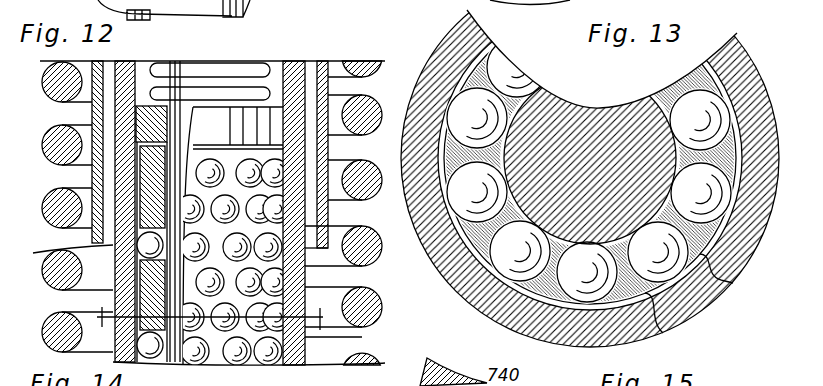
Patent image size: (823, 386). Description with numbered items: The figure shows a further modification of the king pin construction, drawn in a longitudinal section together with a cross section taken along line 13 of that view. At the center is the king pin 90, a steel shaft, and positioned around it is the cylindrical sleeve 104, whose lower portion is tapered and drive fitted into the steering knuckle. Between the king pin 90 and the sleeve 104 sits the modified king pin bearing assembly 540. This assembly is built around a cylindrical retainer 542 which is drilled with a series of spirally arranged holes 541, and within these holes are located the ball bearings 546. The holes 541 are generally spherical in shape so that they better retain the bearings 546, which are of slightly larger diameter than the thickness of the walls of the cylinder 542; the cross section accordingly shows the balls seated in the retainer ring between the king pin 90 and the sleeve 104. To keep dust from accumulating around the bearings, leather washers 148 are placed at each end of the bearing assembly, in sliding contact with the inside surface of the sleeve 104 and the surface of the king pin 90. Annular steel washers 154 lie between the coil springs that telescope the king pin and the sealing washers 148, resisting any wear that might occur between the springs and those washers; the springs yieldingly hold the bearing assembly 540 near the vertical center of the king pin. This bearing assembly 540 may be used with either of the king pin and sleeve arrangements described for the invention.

In FIG. 12, the section line 13- 13 is at (211, 328).
In FIG. 12, the king pin 90 is at (243, 84).
In FIG. 13, the king pin 90 is at (590, 158).
In FIG. 12, the cylindrical sleeve 104 is at (120, 296).
In FIG. 13, the cylindrical sleeve 104 is at (707, 302).
In FIG. 12, the leather washers 148 is at (150, 132).
In FIG. 12, the annular steel washers 154 is at (151, 76).
In FIG. 12, the king pin bearing assembly 540 is at (283, 178).
In FIG. 12, the spirally arranged holes 541 is at (283, 216).
In FIG. 13, the spirally arranged holes 541 is at (667, 327).
In FIG. 12, the cylindrical retainer 542 is at (150, 168).
In FIG. 13, the cylindrical retainer 542 is at (715, 272).
In FIG. 12, the ball bearings 546 is at (283, 290).